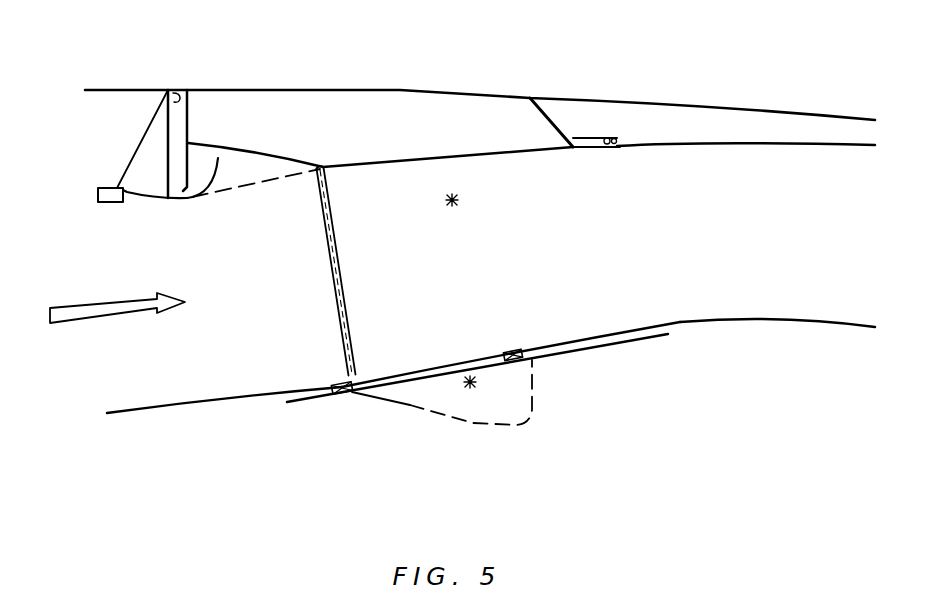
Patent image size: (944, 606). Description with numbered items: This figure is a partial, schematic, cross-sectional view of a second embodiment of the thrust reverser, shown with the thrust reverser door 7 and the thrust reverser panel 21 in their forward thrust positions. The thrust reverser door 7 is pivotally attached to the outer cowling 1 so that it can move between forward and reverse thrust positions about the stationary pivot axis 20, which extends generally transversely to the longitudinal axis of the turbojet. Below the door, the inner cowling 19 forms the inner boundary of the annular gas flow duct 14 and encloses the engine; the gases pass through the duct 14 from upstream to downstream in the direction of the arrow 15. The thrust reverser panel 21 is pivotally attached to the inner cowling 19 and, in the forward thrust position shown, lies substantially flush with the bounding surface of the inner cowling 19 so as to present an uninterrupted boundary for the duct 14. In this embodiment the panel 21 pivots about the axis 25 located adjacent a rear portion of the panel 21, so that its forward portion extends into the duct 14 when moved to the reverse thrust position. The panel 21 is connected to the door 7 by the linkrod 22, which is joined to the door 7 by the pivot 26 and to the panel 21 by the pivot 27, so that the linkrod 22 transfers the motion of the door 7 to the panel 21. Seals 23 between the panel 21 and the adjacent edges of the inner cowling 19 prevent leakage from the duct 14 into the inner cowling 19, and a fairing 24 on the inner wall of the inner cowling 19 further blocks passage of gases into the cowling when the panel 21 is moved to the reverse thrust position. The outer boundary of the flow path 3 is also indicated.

The outer cowling 1 is at (160, 143).
The nacelle outer wall 3 is at (670, 101).
The thrust reverser door 7 is at (258, 110).
The annular gas flow duct 14 is at (168, 238).
The arrow 15 is at (75, 315).
The inner cowling 19 is at (680, 322).
The stationary pivot axis 20 is at (457, 201).
The thrust reverser panel 21 is at (390, 381).
The linkrod 22 is at (333, 270).
The seals 23 is at (528, 360).
The fairing 24 is at (518, 427).
The pivot axis 25 is at (464, 379).
The pivot 26 is at (322, 166).
The pivot 27 is at (348, 378).